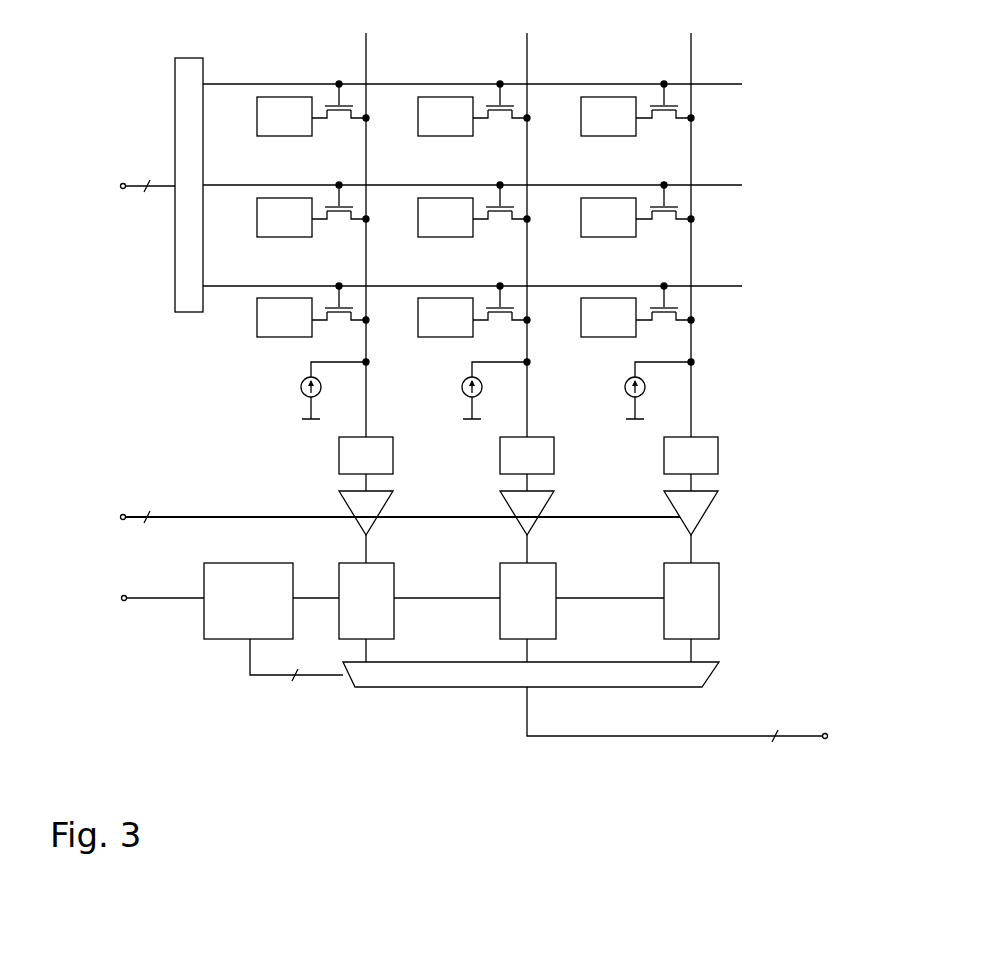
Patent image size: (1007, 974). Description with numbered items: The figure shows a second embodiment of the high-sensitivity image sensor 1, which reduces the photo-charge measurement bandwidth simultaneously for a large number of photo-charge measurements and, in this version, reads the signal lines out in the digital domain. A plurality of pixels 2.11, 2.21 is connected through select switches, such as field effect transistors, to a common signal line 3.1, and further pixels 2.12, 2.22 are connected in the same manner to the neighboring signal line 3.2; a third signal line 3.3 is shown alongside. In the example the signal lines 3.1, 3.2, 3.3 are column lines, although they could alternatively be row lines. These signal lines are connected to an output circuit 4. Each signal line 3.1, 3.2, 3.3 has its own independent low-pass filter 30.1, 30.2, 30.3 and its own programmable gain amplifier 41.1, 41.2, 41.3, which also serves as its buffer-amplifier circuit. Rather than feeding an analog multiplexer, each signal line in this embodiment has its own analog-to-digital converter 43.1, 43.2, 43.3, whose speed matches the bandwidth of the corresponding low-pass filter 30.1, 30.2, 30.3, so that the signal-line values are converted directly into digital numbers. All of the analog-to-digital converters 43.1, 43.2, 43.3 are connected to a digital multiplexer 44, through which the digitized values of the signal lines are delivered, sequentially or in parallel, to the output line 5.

The image sensor 1 is at (108, 58).
The pixel 2.11 is at (285, 136).
The pixel 2.12 is at (446, 136).
The pixel 2.21 is at (285, 237).
The pixel 2.22 is at (446, 237).
The signal line 3.1 is at (368, 52).
The signal line 3.2 is at (529, 52).
The signal line 3.3 is at (693, 52).
The low-pass filter 30.1 is at (393, 452).
The low-pass filter 30.2 is at (554, 452).
The low-pass filter 30.3 is at (718, 452).
The output circuit 4 is at (318, 496).
The programmable gain amplifier 41.1 is at (390, 497).
The programmable gain amplifier 41.2 is at (551, 497).
The programmable gain amplifier 41.3 is at (715, 497).
The analog-to-digital converter 43.1 is at (394, 573).
The analog-to-digital converter 43.2 is at (556, 573).
The analog-to-digital converter 43.3 is at (719, 573).
The digital multiplexer 44 is at (719, 672).
The output line 5 is at (800, 738).